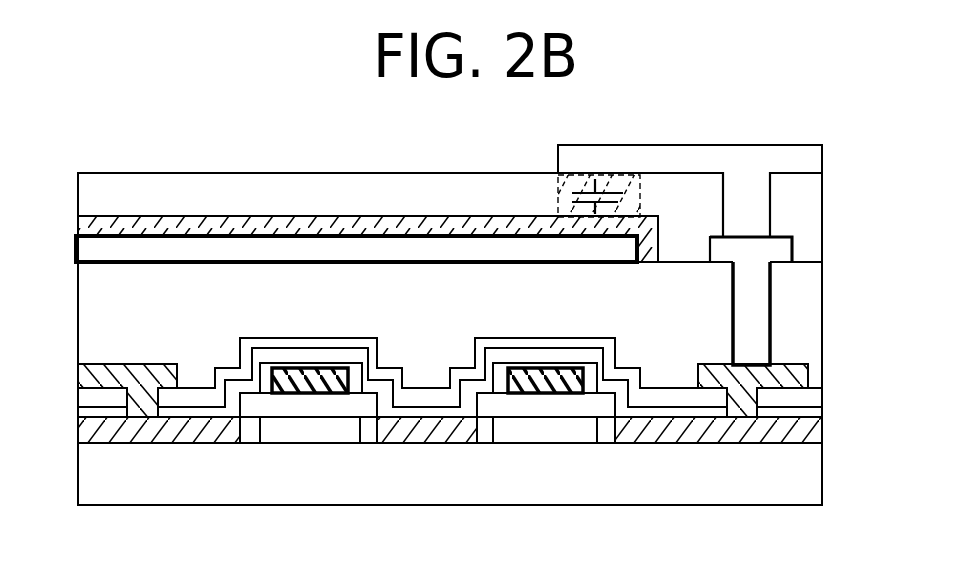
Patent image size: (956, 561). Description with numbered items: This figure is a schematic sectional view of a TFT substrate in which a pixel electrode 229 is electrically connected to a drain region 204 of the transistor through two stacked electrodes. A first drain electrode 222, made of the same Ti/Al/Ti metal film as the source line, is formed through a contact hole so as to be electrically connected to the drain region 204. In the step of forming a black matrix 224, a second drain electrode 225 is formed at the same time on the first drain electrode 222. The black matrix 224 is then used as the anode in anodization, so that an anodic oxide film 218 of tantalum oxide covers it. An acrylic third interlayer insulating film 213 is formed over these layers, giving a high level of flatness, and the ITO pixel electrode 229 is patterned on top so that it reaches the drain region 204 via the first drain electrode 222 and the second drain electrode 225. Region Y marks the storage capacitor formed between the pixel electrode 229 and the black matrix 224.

The third interlayer insulating film 213 is at (116, 200).
The anodic oxide film 218 is at (259, 224).
The black matrix 224 is at (430, 240).
The pixel electrode 229 is at (745, 162).
The second drain electrode 225 is at (748, 327).
The first drain electrode 222 is at (785, 373).
The drain region 204 is at (740, 427).
The region Y is at (579, 193).